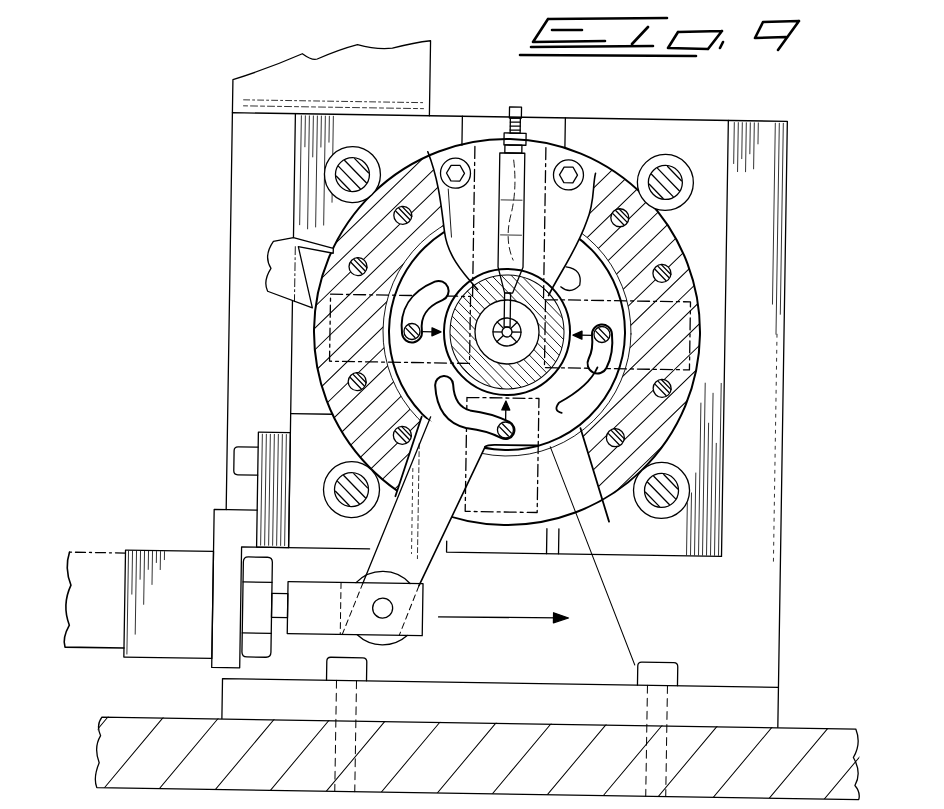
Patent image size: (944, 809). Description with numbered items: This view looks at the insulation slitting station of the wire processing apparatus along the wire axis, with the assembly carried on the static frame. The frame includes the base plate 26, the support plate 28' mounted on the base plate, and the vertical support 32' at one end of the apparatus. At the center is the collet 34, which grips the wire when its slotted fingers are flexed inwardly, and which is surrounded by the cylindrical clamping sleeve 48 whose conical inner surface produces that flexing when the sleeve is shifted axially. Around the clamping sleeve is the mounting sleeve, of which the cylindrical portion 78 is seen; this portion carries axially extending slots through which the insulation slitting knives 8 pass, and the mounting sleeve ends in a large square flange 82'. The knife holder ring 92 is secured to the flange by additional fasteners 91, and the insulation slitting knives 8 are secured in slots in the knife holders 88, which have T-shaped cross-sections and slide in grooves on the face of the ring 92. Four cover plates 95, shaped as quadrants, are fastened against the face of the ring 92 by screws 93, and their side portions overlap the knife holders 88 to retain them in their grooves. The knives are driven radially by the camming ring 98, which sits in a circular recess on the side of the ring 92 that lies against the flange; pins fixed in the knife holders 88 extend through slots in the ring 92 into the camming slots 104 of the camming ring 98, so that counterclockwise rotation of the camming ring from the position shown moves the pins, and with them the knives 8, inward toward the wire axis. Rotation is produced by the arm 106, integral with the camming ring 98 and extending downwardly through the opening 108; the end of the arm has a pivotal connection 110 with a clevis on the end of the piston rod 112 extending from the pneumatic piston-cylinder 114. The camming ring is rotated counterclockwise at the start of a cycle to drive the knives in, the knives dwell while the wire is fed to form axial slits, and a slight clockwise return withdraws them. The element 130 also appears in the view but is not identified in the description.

The insulation slitting knives 8 is at (548, 292).
The base plate 26 is at (812, 743).
The support plate 28' is at (500, 715).
The vertical support 32' is at (790, 344).
The collet 34 is at (345, 180).
The clamping sleeve 48 is at (492, 337).
The cylindrical portion of the mounting sleeve 78 is at (583, 292).
The flange 82' is at (533, 382).
The knife holders 88 is at (512, 205).
The additional fasteners 91 is at (668, 270).
The knife holder ring 92 is at (453, 303).
The screws 93 is at (607, 440).
The cover plates 95 is at (593, 172).
The camming ring 98 is at (531, 423).
The camming slots 104 is at (455, 407).
The arm 106 is at (436, 560).
The opening 108 is at (587, 495).
The pivotal connection 110 is at (389, 618).
The piston rod 112 is at (284, 615).
The pneumatic piston-cylinder 114 is at (95, 565).
The stop bar 130 is at (285, 256).